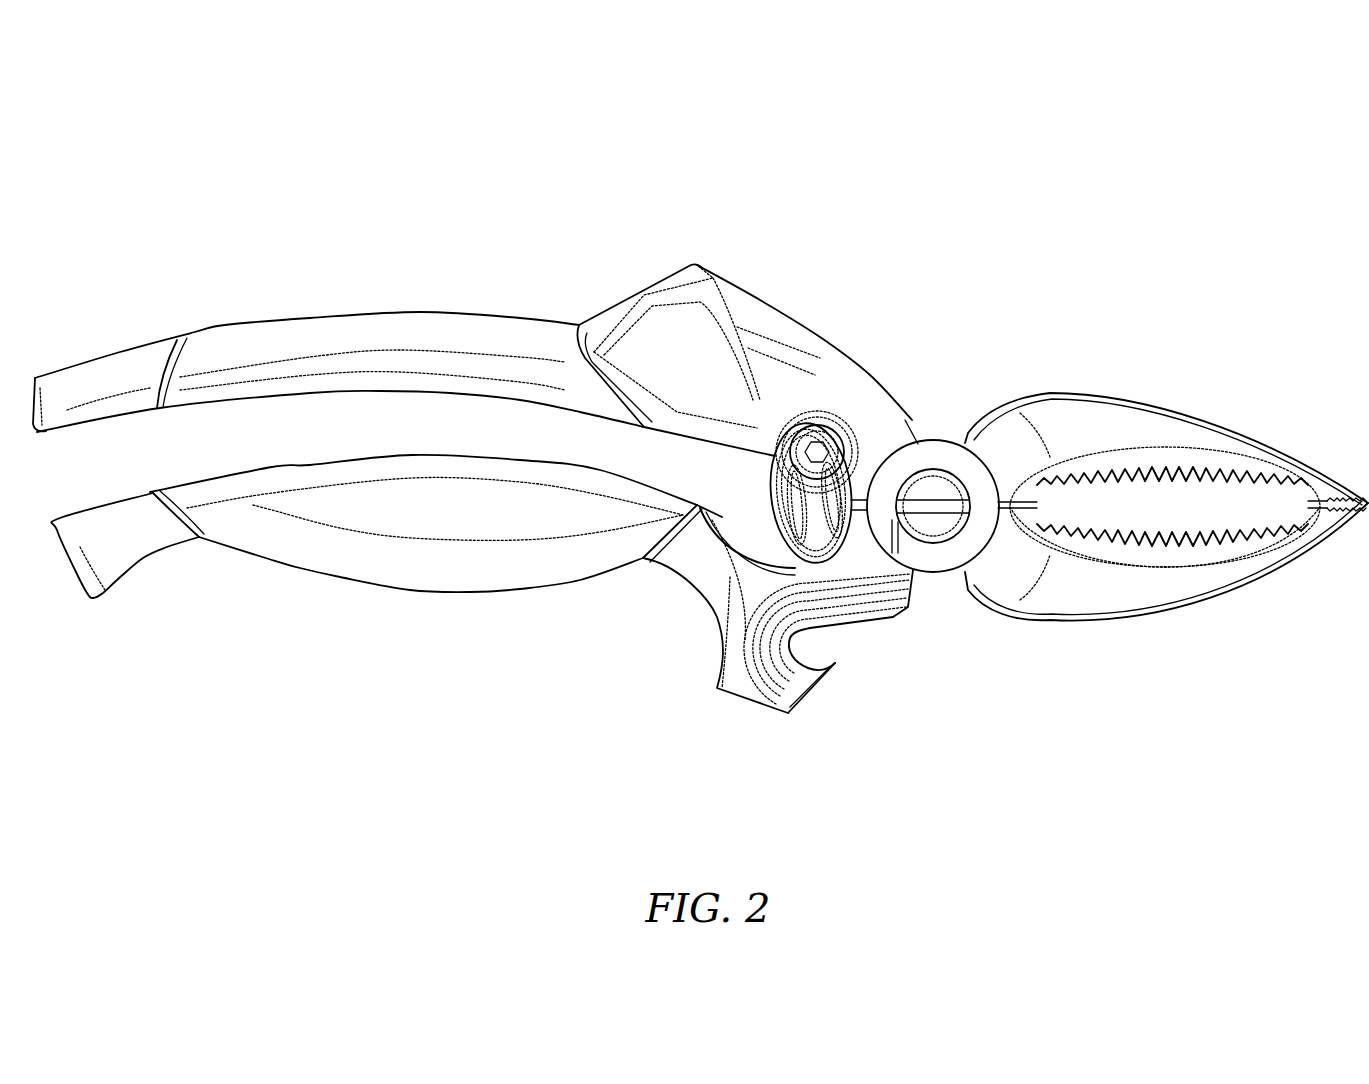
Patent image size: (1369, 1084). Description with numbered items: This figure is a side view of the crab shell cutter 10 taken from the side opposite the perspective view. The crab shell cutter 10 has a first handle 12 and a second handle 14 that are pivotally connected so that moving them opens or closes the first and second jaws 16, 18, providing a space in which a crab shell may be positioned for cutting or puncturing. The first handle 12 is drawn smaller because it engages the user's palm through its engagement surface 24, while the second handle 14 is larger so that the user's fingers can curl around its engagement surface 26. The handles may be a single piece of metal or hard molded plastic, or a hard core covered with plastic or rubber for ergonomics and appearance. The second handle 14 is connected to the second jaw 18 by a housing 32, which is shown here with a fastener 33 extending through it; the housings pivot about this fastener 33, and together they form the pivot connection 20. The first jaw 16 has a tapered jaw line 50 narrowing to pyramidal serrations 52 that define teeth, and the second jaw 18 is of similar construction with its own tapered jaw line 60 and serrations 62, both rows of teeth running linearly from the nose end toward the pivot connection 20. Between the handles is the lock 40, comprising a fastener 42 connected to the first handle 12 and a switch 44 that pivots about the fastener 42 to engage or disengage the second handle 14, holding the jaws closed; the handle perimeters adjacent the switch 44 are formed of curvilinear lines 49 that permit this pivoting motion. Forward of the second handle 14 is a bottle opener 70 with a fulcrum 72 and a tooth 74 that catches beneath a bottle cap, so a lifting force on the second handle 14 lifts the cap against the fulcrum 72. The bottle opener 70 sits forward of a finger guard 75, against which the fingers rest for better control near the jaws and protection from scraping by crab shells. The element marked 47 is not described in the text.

The crab shell cutter 10 is at (1085, 145).
The first handle 12 is at (305, 262).
The second handle 14 is at (412, 625).
The first jaw 16 is at (1235, 615).
The second jaw 18 is at (1232, 408).
The pivot connection 20 is at (962, 400).
The engagement surface 24 is at (443, 330).
The engagement surface 26 is at (533, 588).
The second housing 32 is at (945, 578).
The fastener 33 is at (933, 468).
The lock 40 is at (675, 470).
The fastener 42 is at (832, 432).
The switch 44 is at (800, 425).
The lobe 47 is at (760, 555).
The curvilinear lines 49 is at (760, 400).
The tapered jaw line 50 is at (1145, 553).
The serrations 52 is at (1072, 535).
The tapered jaw line 60 is at (1158, 460).
The serrations 62 is at (1210, 482).
The bottle opener 70 is at (897, 675).
The fulcrum 72 is at (905, 650).
The tooth 74 is at (855, 730).
The finger guard 75 is at (668, 645).